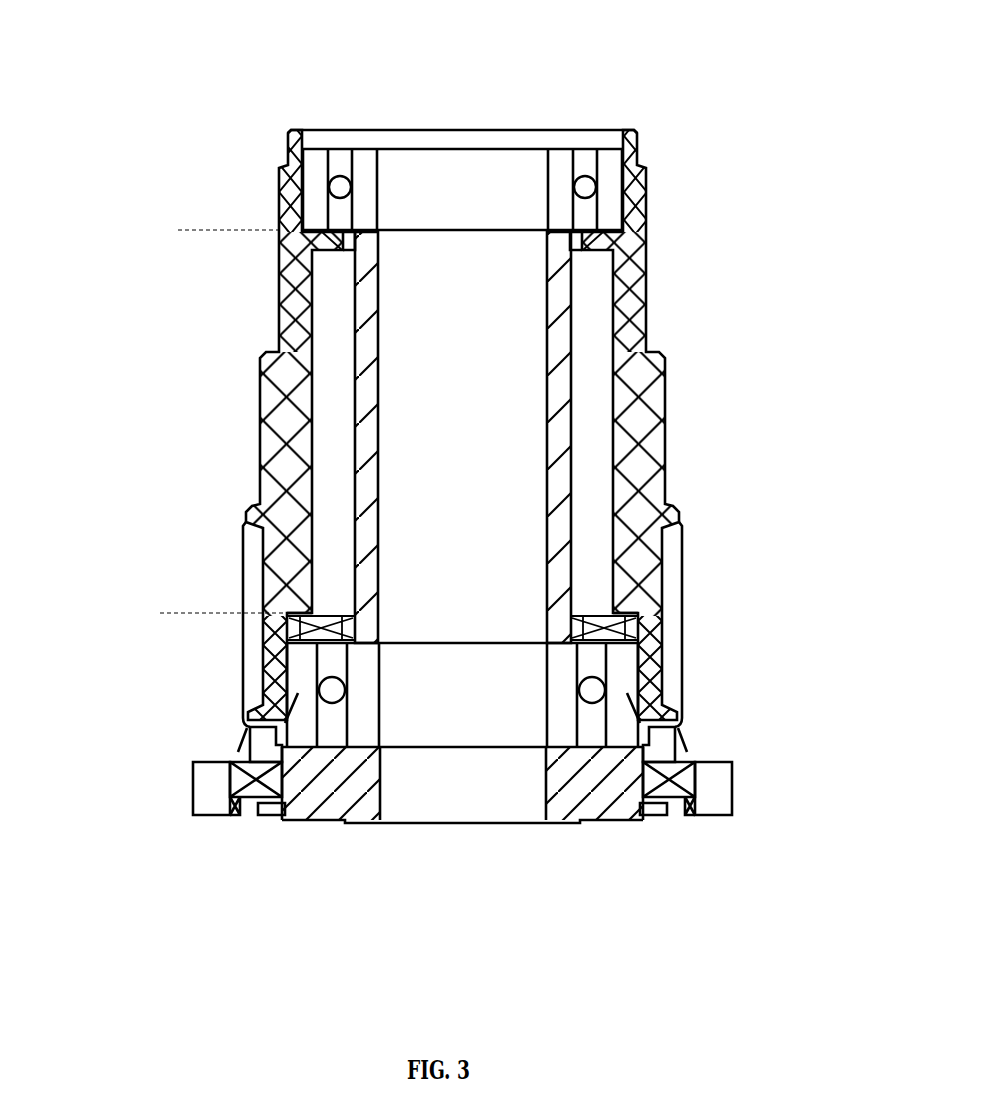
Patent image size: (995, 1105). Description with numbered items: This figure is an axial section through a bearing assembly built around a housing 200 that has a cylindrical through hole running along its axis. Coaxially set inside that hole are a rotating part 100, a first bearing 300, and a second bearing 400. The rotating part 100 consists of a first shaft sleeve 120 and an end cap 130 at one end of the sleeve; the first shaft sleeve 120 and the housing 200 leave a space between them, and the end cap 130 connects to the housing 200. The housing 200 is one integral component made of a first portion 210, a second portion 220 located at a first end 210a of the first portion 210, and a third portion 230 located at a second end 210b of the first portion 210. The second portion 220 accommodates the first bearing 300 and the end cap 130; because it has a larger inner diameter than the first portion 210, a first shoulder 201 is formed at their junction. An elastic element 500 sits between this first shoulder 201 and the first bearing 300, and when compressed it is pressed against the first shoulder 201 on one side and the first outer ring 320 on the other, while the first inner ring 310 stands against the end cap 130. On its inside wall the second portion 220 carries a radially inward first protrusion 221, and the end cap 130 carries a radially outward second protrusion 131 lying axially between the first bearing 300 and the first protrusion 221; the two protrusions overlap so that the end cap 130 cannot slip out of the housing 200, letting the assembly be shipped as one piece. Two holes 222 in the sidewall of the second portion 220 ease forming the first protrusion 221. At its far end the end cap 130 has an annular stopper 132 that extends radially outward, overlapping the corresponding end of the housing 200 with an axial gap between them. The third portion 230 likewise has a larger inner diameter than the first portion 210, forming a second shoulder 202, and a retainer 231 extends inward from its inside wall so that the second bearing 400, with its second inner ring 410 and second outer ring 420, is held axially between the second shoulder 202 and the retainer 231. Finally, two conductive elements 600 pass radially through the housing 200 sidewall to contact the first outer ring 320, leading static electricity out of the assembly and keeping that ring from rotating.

The rotating part 100 is at (827, 717).
The first shaft sleeve 120 is at (583, 416).
The end cap 130 is at (640, 748).
The second protrusion 131 is at (345, 745).
The annular stopper 132 is at (270, 822).
The housing 200 is at (107, 180).
The first shoulder 201 is at (619, 611).
The second shoulder 202 is at (612, 228).
The first portion 210 is at (255, 385).
The first end 210a is at (204, 600).
The second end 210b is at (206, 243).
The second portion 220 is at (241, 675).
The first protrusion 221 is at (285, 782).
The holes 222 is at (257, 756).
The third portion 230 is at (278, 206).
The retainer 231 is at (621, 138).
The first bearing 300 is at (685, 888).
The first inner ring 310 is at (600, 822).
The first outer ring 320 is at (647, 822).
The second bearing 400 is at (352, 53).
The second inner ring 410 is at (367, 150).
The second outer ring 420 is at (310, 150).
The elastic element 500 is at (585, 615).
The conductive elements 600 is at (240, 742).